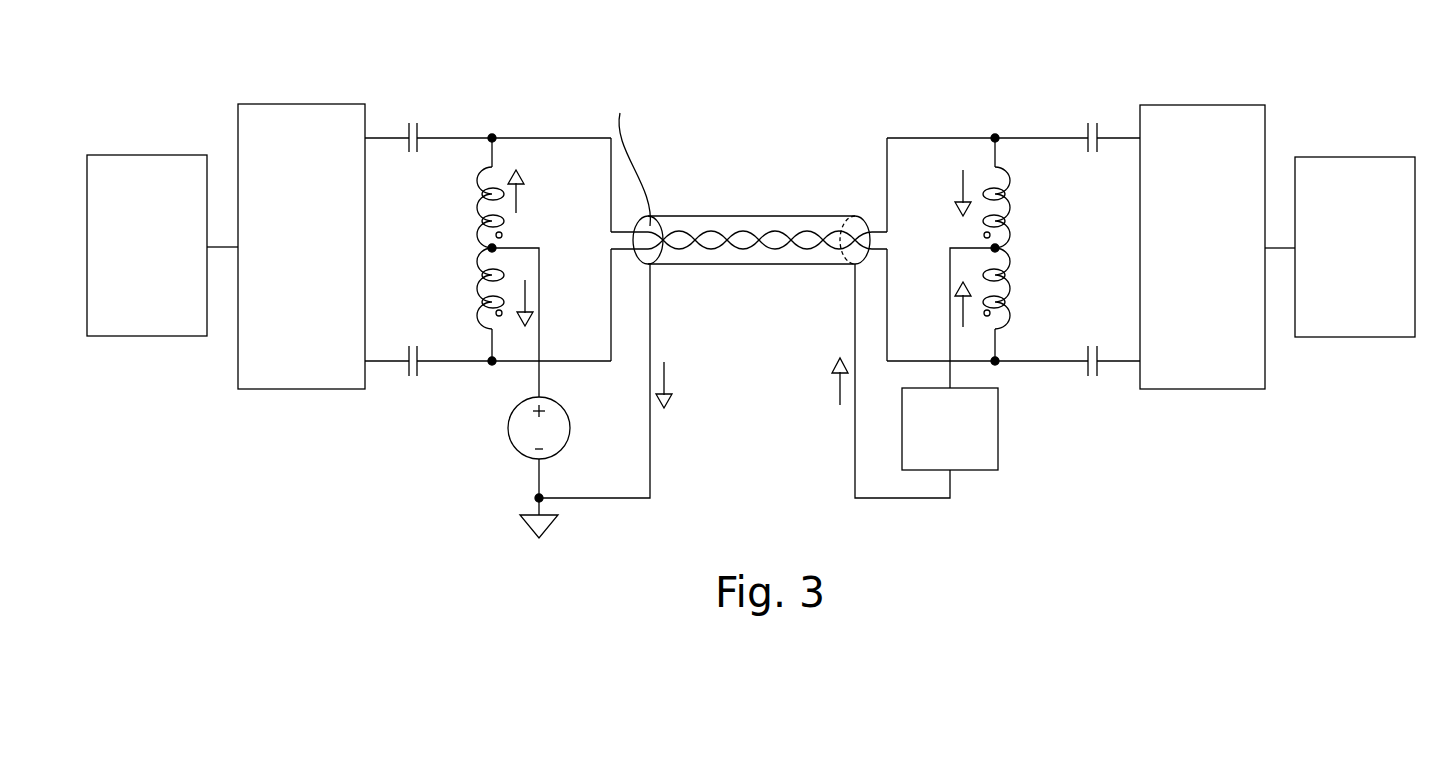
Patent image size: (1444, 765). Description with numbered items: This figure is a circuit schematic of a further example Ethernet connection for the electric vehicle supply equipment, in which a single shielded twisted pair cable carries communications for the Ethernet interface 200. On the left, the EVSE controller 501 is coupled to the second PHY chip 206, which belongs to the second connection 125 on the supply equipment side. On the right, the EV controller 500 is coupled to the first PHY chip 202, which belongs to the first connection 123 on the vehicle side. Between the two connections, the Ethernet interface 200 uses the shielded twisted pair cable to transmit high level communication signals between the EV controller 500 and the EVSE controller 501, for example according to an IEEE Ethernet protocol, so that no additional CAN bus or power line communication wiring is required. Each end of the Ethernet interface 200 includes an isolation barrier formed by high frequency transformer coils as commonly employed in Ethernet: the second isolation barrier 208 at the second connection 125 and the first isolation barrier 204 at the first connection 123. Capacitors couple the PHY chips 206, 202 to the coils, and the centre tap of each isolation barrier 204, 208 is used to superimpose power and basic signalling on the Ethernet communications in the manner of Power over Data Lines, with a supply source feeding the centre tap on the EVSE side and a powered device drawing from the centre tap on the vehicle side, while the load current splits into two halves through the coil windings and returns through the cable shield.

The second PHY chip 206 is at (347, 115).
The first PHY chip 202 is at (1155, 117).
The Ethernet interface 200 is at (742, 122).
The EVSE controller 501 is at (147, 245).
The EV controller 500 is at (1355, 247).
The second connection 125 is at (441, 315).
The first connection 123 is at (1047, 282).
The second isolation barrier 208 is at (490, 308).
The first isolation barrier 204 is at (990, 308).